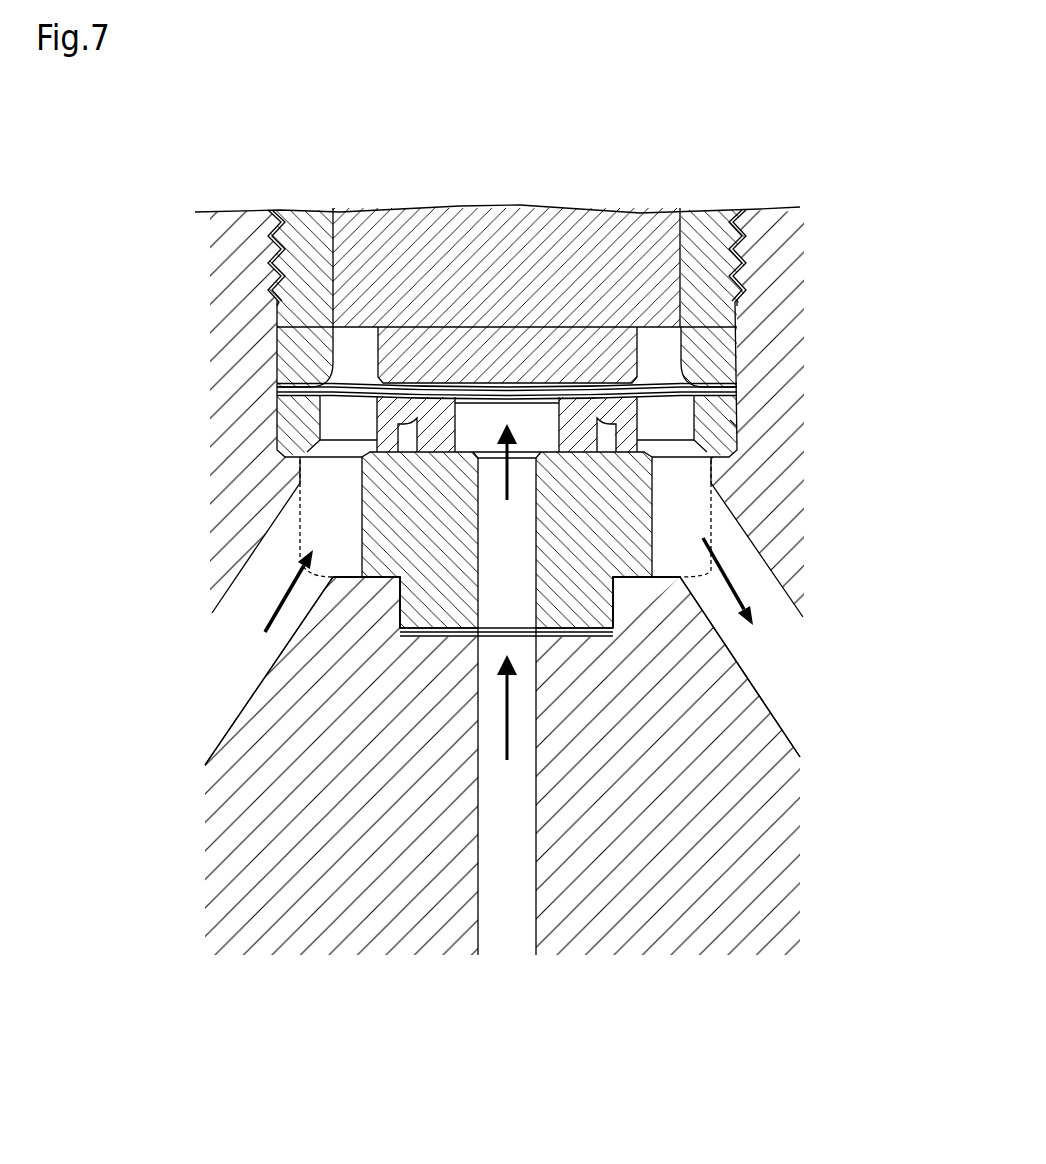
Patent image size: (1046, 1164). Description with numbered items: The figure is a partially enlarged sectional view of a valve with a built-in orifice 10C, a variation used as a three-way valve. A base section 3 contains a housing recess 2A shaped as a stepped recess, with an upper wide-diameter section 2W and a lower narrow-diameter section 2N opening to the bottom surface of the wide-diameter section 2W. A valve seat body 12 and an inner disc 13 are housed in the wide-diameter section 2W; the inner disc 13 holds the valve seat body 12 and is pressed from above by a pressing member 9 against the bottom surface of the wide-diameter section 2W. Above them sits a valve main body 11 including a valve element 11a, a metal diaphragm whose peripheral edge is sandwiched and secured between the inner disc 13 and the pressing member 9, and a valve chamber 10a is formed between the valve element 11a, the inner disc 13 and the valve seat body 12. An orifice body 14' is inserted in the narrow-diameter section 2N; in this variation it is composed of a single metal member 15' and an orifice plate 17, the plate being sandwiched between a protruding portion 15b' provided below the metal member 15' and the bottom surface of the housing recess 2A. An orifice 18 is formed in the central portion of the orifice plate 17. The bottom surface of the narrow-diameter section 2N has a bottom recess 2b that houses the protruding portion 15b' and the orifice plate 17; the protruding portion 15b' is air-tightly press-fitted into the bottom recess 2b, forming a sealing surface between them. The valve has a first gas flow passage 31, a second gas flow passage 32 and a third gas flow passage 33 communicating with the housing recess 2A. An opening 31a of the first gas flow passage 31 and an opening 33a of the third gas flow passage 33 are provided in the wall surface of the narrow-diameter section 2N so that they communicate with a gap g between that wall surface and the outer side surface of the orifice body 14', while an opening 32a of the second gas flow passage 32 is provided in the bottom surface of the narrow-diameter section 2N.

The base section 3 is at (217, 272).
The valve with a built-in orifice 10C is at (722, 200).
The valve main body 11 is at (523, 250).
The valve element 11a is at (413, 395).
The pressing member 9 is at (717, 347).
The valve chamber 10a is at (600, 390).
The valve seat body 12 is at (427, 432).
The inner disc 13 is at (296, 428).
The narrow-diameter section 2N is at (714, 473).
The housing recess 2A is at (740, 397).
The wide-diameter section 2W is at (738, 427).
The gap g is at (688, 500).
The opening of the first gas flow passage 31a is at (298, 523).
The opening of the third gas flow passage 33a is at (714, 527).
The first gas flow passage 31 is at (243, 587).
The third gas flow passage 33 is at (768, 604).
The bottom recess 2b is at (617, 615).
The orifice 18 is at (509, 638).
The second gas flow passage 32 is at (525, 882).
The opening of the second gas flow passage 32a is at (483, 637).
The orifice body 14' is at (368, 683).
The metal member 15' is at (257, 652).
The protruding portion 15b' is at (275, 658).
The orifice plate 17 is at (475, 630).